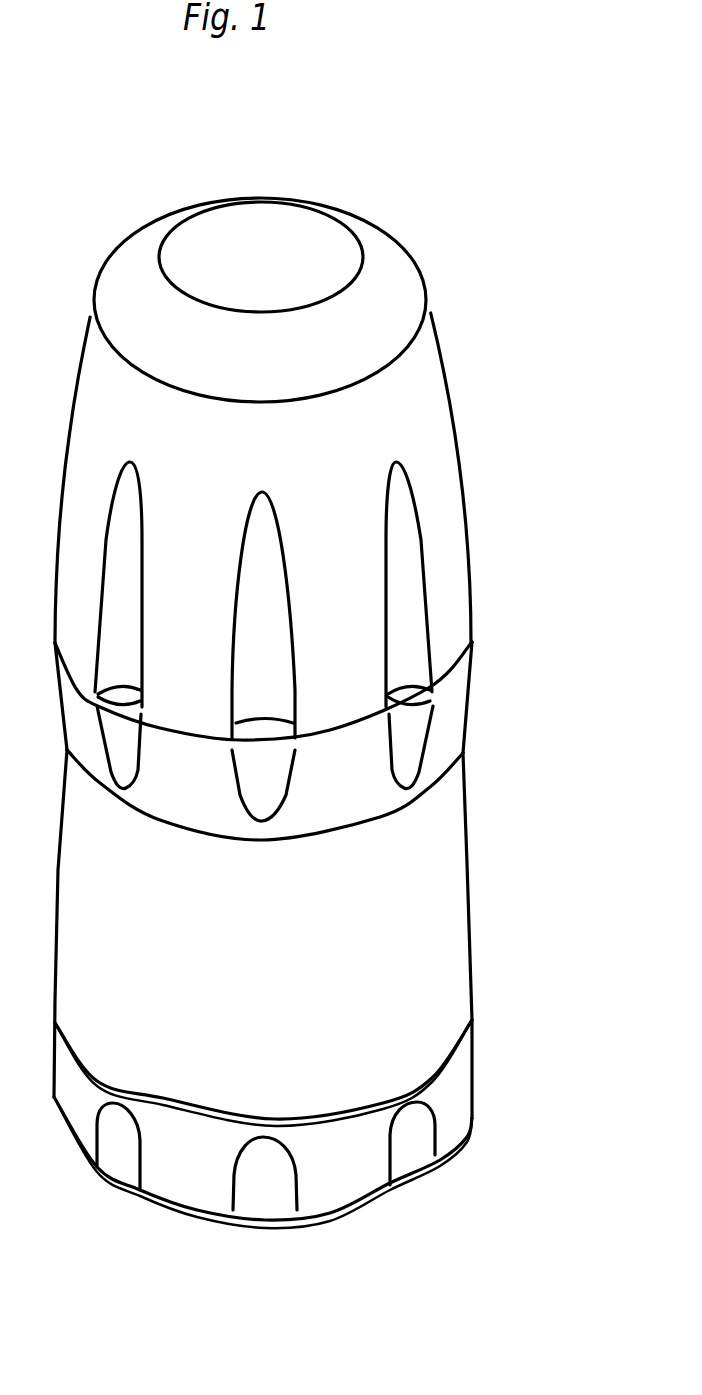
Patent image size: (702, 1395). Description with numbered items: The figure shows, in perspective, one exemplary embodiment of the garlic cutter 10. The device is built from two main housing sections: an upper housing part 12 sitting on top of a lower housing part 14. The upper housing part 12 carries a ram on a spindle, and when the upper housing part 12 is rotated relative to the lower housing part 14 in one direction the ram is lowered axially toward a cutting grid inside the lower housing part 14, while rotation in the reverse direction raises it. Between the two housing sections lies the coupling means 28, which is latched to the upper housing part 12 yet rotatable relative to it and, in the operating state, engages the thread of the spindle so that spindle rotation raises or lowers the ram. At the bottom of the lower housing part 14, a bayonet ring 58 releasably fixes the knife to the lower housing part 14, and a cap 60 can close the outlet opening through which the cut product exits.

The garlic cutter 10 is at (452, 212).
The upper housing part 12 is at (447, 465).
The lower housing part 14 is at (458, 867).
The coupling means 28 is at (465, 708).
The bayonet ring 58 is at (470, 1072).
The cap 60 is at (282, 1223).